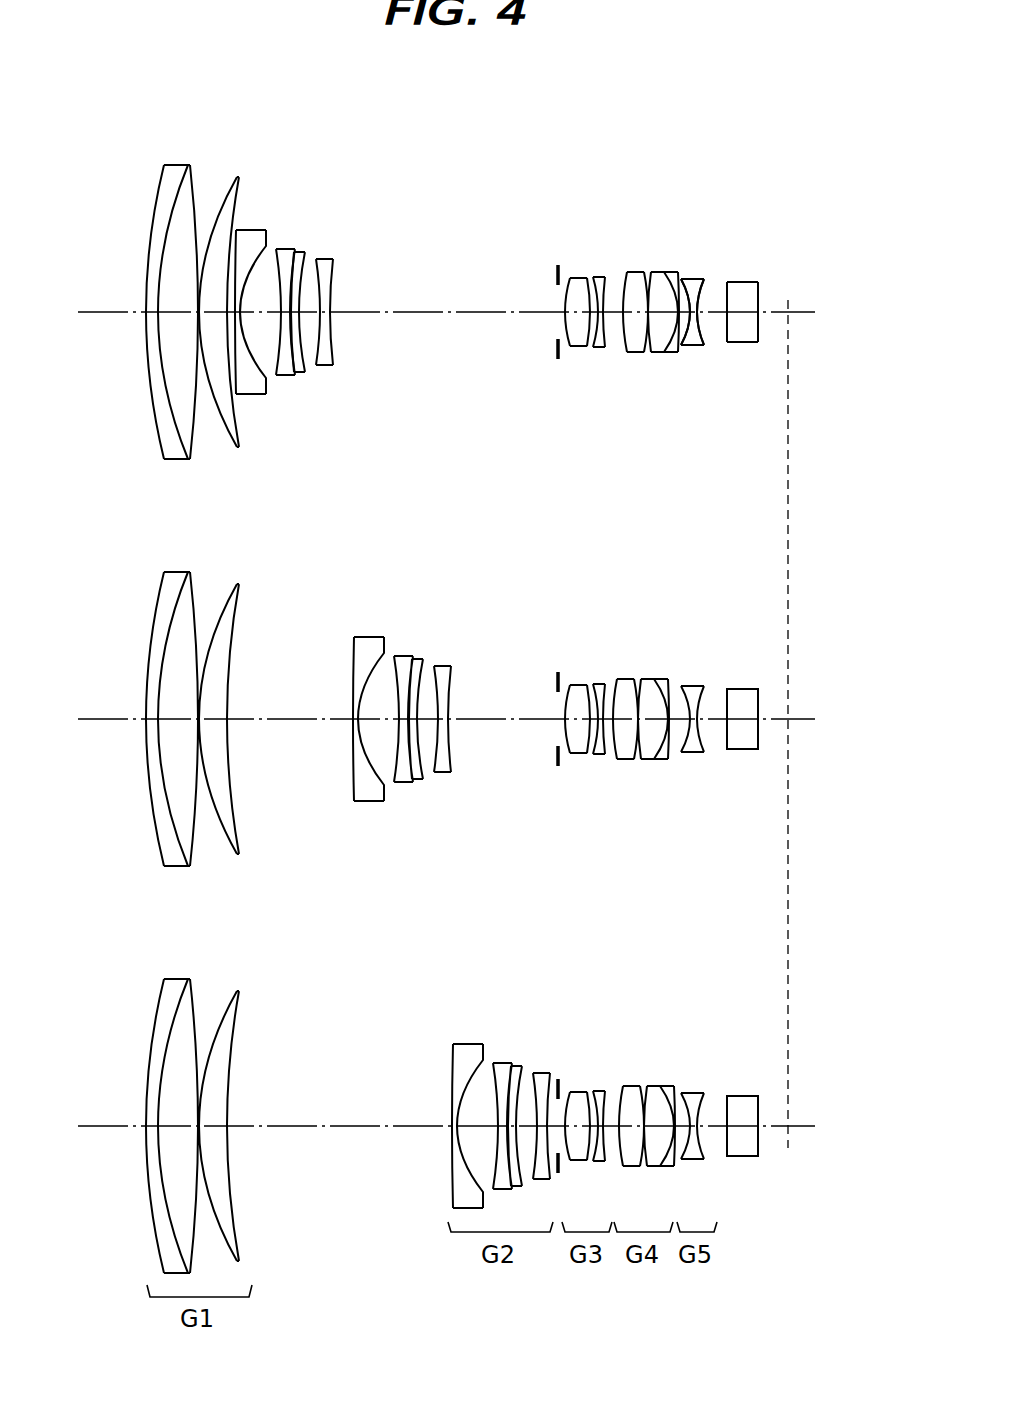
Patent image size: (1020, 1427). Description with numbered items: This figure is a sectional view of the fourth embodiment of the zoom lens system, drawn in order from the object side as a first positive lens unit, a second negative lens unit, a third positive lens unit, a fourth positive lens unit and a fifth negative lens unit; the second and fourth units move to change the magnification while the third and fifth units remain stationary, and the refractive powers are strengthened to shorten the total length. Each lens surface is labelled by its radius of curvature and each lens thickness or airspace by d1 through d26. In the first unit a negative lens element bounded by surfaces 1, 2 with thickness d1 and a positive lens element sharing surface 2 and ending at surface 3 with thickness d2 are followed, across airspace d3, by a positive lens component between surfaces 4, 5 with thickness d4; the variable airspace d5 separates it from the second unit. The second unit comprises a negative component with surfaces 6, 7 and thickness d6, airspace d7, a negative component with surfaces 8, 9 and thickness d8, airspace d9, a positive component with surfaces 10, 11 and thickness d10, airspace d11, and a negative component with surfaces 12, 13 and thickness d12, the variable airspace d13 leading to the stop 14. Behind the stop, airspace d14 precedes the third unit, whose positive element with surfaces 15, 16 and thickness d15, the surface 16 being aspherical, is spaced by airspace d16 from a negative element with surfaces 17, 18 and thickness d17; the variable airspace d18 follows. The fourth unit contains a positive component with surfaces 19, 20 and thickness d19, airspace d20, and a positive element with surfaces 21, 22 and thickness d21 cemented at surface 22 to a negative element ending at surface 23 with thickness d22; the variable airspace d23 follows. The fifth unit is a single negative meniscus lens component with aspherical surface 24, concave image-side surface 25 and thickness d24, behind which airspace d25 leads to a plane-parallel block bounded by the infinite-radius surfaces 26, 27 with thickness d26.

The radius of curvature of lens surface 1 is at (156, 193).
The radius of curvature of lens surface 2 is at (186, 164).
The radius of curvature of lens surface 3 is at (193, 183).
The radius of curvature of lens surface 4 is at (222, 205).
The radius of curvature of lens surface 5 is at (237, 178).
The radius of curvature of lens surface 6 is at (246, 230).
The radius of curvature of lens surface 7 is at (265, 230).
The radius of curvature of lens surface 8 is at (276, 249).
The radius of curvature of lens surface 9 is at (293, 249).
The radius of curvature of lens surface 10 is at (295, 252).
The radius of curvature of lens surface 11 is at (305, 252).
The radius of curvature of lens surface 12 is at (316, 259).
The radius of curvature of lens surface 13 is at (333, 260).
The stop 14 is at (556, 274).
The radius of curvature of lens surface 15 is at (569, 278).
The radius of curvature of lens surface 16 is at (585, 278).
The radius of curvature of lens surface 17 is at (596, 277).
The radius of curvature of lens surface 18 is at (606, 277).
The radius of curvature of lens surface 19 is at (627, 272).
The radius of curvature of lens surface 20 is at (644, 272).
The radius of curvature of lens surface 21 is at (651, 272).
The radius of curvature of lens surface 22 is at (668, 272).
The radius of curvature of lens surface 23 is at (678, 272).
The radius of curvature of lens surface 24 is at (683, 280).
The radius of curvature of lens surface 25 is at (704, 281).
The radius of curvature of lens surface 26 is at (728, 285).
The radius of curvature of lens surface 27 is at (760, 292).
The lens thickness d1 is at (153, 312).
The lens thickness d2 is at (177, 312).
The airspace d3 is at (199, 313).
The lens thickness d4 is at (212, 313).
The variable airspace d5 is at (231, 313).
The lens thickness d6 is at (245, 395).
The airspace d7 is at (272, 340).
The lens thickness d8 is at (283, 340).
The airspace d9 is at (289, 313).
The lens thickness d10 is at (296, 335).
The airspace d11 is at (309, 335).
The lens thickness d12 is at (323, 318).
The variable airspace d13 is at (428, 315).
The airspace d14 is at (560, 316).
The lens thickness d15 is at (576, 348).
The airspace d16 is at (592, 350).
The lens thickness d17 is at (600, 350).
The variable airspace d18 is at (614, 350).
The lens thickness d19 is at (635, 353).
The airspace d20 is at (649, 353).
The lens thickness d21 is at (660, 353).
The lens thickness d22 is at (671, 353).
The variable airspace d23 is at (679, 347).
The lens thickness d24 is at (695, 346).
The airspace d25 is at (715, 320).
The lens thickness d26 is at (745, 318).